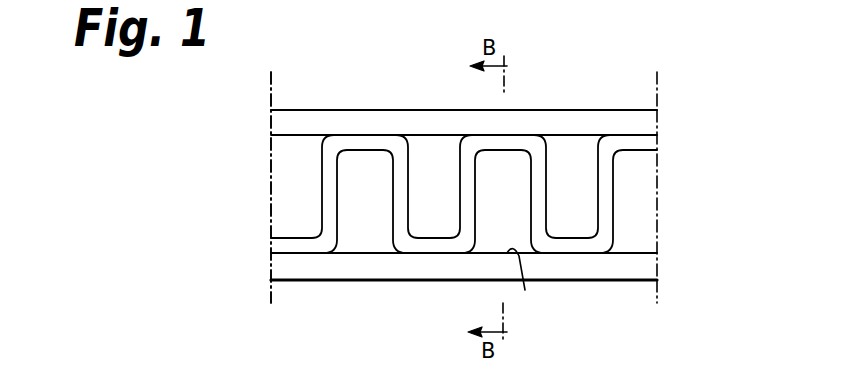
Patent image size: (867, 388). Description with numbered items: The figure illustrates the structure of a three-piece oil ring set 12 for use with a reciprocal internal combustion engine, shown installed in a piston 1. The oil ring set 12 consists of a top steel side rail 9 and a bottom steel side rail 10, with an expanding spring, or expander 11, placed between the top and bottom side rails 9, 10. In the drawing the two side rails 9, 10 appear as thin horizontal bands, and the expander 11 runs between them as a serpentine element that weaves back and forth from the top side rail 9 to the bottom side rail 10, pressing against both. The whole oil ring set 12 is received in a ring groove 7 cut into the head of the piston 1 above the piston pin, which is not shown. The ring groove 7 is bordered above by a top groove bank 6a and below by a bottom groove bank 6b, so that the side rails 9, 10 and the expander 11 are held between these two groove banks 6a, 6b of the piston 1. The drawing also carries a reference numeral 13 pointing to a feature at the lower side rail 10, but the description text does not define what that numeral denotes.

The piston 1 is at (659, 284).
The top groove bank 6a is at (652, 89).
The bottom groove bank 6b is at (643, 287).
The ring groove 7 is at (279, 189).
The top side rail 9 is at (652, 126).
The bottom side rail 10 is at (652, 267).
The expander 11 is at (613, 178).
The oil ring set 12 is at (715, 112).
The opening 13 is at (525, 283).